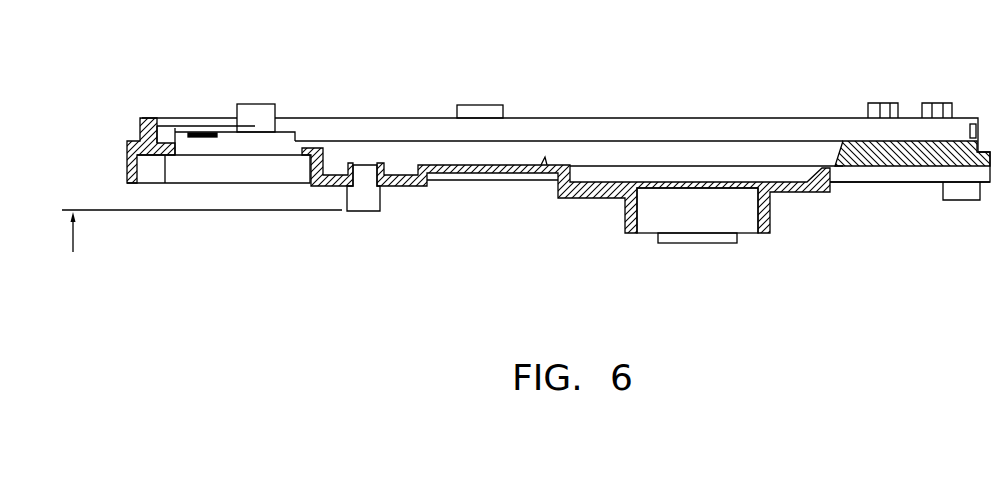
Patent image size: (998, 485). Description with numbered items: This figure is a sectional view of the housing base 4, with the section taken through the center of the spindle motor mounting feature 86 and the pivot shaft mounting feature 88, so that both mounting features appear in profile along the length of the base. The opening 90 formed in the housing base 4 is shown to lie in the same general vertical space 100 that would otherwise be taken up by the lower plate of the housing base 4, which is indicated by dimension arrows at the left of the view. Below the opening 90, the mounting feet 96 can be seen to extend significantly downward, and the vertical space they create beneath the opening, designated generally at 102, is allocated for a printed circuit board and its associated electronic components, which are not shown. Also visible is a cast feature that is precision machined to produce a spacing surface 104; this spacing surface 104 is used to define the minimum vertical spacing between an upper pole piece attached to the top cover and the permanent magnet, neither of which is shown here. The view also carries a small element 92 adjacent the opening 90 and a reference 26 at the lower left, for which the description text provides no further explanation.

The housing base 4 is at (889, 84).
The mounting surface 26 is at (0, 440).
The spindle motor mounting feature 86 is at (716, 170).
The pivot shaft mounting feature 88 is at (368, 145).
The opening 90 is at (172, 188).
The contact bar 92 is at (204, 138).
The mounting feet 96 is at (364, 222).
The vertical space 100 is at (108, 195).
The vertical space 102 is at (123, 182).
The spacing surface 104 is at (262, 95).